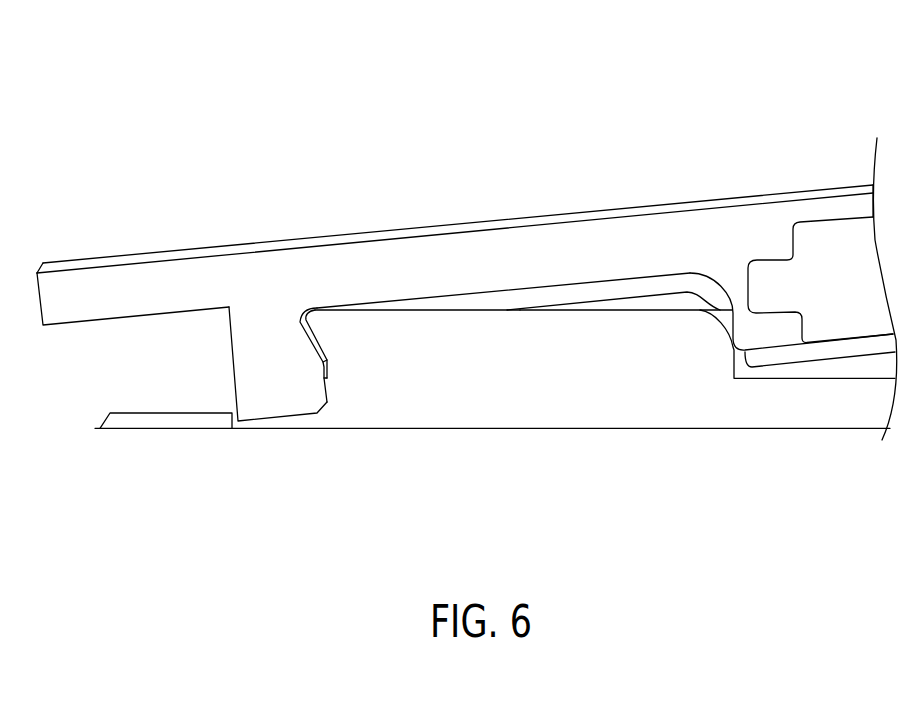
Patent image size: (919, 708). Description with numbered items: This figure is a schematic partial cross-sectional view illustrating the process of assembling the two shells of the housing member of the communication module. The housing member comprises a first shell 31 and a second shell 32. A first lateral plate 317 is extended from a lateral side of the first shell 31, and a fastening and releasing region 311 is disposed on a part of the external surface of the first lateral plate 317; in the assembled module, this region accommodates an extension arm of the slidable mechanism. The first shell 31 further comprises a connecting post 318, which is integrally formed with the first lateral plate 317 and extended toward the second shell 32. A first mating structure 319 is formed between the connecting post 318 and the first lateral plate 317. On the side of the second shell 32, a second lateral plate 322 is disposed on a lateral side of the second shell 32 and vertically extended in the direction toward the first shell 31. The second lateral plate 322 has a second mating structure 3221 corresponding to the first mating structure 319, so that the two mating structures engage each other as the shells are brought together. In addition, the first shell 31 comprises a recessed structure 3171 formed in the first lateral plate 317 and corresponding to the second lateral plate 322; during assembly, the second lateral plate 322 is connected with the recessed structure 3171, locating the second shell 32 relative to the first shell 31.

The first shell 31 is at (317, 242).
The fastening and releasing region 311 is at (827, 247).
The first lateral plate 317 is at (658, 233).
The recessed structure 3171 is at (703, 278).
The connecting post 318 is at (247, 367).
The first mating structure 319 is at (305, 312).
The second shell 32 is at (177, 418).
The second lateral plate 322 is at (522, 415).
The second mating structure 3221 is at (306, 314).